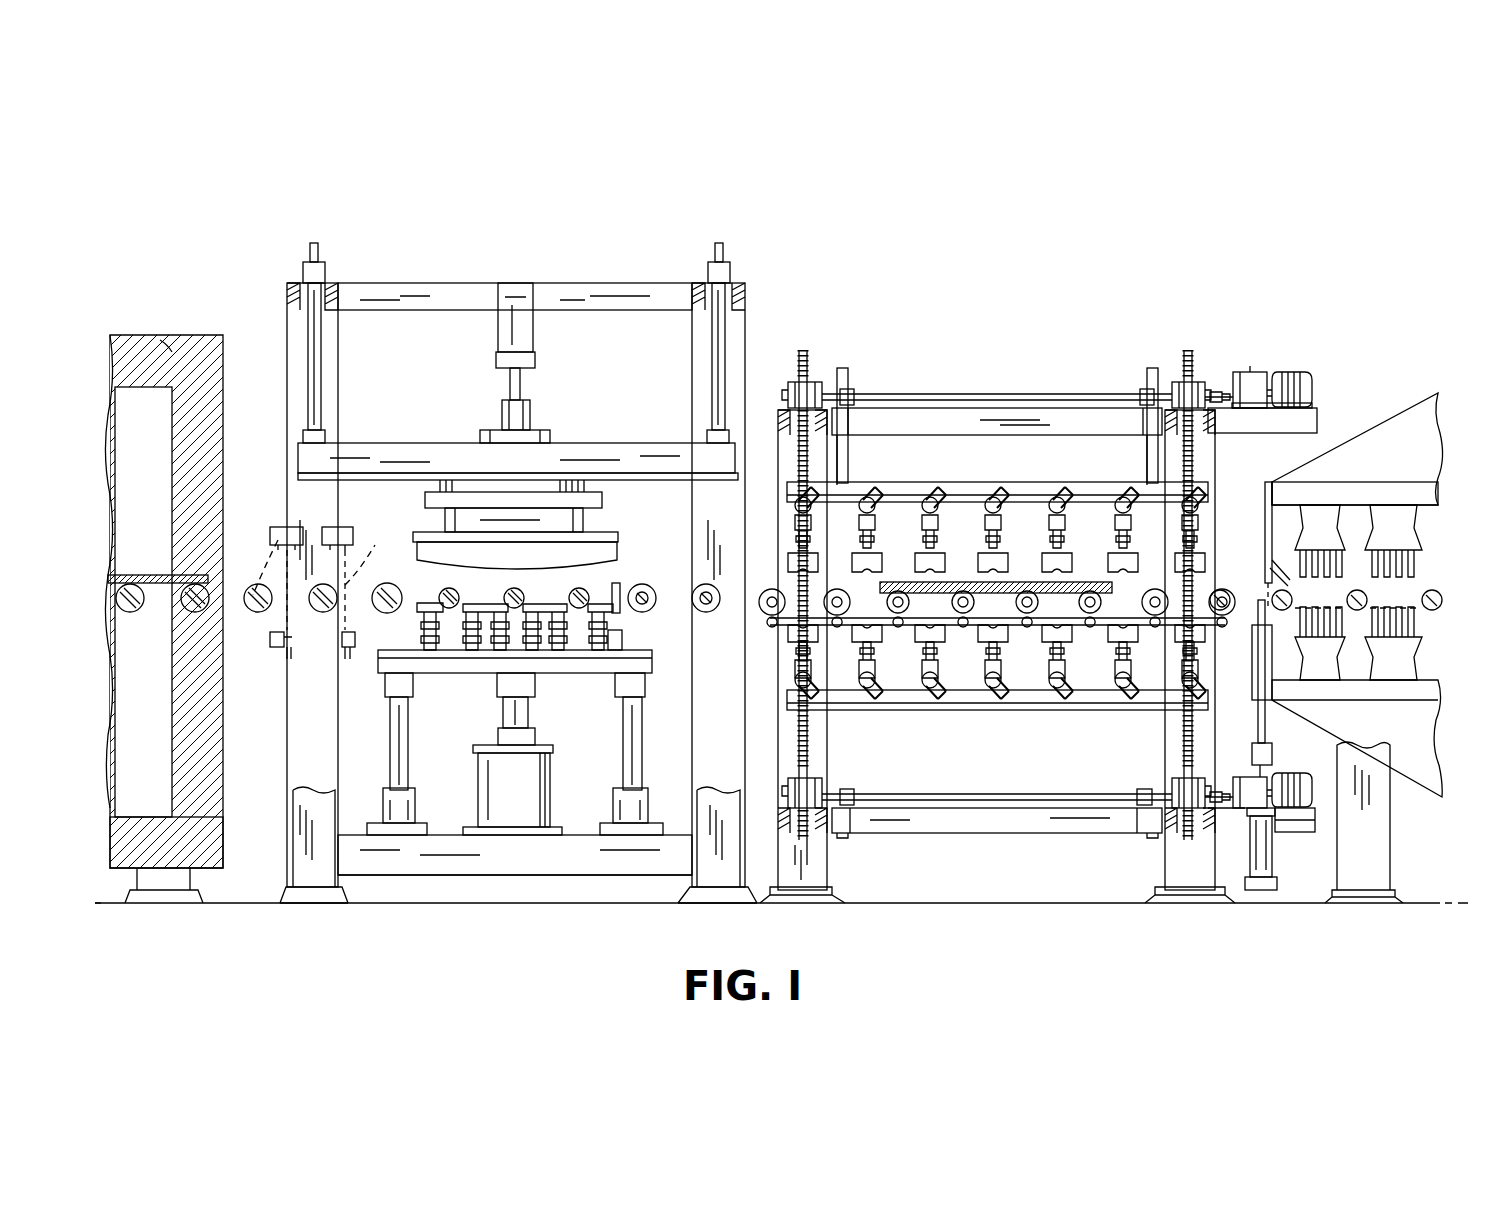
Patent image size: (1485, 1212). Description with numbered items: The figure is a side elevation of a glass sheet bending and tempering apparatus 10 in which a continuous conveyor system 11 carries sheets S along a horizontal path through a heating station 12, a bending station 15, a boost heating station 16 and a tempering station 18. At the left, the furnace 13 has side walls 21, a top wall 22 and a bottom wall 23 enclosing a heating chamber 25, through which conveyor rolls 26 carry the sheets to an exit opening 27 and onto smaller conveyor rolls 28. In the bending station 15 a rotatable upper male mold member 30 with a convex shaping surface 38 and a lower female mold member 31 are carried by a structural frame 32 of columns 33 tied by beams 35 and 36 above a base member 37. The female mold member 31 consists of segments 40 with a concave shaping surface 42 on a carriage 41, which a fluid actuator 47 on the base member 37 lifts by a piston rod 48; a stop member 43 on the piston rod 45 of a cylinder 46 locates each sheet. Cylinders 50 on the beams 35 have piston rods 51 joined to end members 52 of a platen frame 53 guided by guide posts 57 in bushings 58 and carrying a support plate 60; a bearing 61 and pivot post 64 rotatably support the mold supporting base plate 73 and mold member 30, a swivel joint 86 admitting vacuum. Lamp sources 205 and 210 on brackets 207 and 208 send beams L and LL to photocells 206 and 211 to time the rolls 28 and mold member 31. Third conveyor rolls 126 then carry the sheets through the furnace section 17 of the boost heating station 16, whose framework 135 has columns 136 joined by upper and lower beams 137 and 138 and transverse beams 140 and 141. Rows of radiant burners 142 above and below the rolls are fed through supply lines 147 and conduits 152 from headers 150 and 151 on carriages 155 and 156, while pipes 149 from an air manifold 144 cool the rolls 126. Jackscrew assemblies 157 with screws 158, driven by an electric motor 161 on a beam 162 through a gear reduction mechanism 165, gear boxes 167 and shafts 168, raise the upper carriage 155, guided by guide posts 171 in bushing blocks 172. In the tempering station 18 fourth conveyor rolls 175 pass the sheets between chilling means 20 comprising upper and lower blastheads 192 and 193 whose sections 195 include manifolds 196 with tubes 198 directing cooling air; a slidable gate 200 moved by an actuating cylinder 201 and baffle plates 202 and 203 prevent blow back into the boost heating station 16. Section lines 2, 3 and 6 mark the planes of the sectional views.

The glass sheet bending and tempering apparatus 10 is at (850, 190).
The continuous conveyor system 11 is at (250, 582).
The heating station 12 is at (178, 318).
The furnace 13 is at (148, 332).
The bending station 15 is at (616, 256).
The boost heating station 16 is at (1052, 302).
The furnace section 17 is at (980, 462).
The tempering station 18 is at (1432, 368).
The chilling means 20 is at (1402, 405).
The side walls 21 is at (156, 437).
The top wall 22 is at (172, 352).
The bottom wall 23 is at (143, 878).
The heating chamber 25 is at (162, 800).
The conveyor rolls 26 is at (130, 612).
The opening 27 is at (205, 600).
The conveyor rolls 28 is at (453, 600).
The upper male mold member 30 is at (638, 545).
The lower female mold member 31 is at (415, 620).
The structural frame 32 is at (563, 278).
The columns 33 is at (300, 790).
The beams 35 is at (405, 283).
The beams 36 is at (338, 283).
The base member 37 is at (470, 858).
The convex shaping surface 38 is at (598, 572).
The segments 40 is at (595, 615).
The carriage 41 is at (645, 672).
The concave shaping surface 42 is at (498, 608).
The retractable stop members 43 is at (620, 597).
The piston rod 45 is at (618, 612).
The fluid actuating cylinder 46 is at (622, 645).
The fluid actuator 47 is at (490, 782).
The piston rod 48 is at (520, 705).
The actuating cylinders 50 is at (508, 335).
The piston rods 51 is at (520, 388).
The end members 52 is at (386, 455).
The platen frame 53 is at (598, 440).
The guide posts 57 is at (318, 345).
The bushings 58 is at (308, 247).
The central support plate 60 is at (645, 477).
The bearing 61 is at (560, 480).
The pivot post 64 is at (482, 435).
The mold supporting base plate 73 is at (602, 506).
The swivel joint 86 is at (502, 412).
The third conveyor rolls 126 is at (706, 584).
The framework 135 is at (990, 408).
The columns 136 is at (822, 867).
The upper structural beam 137 is at (1052, 425).
The lower structural beam 138 is at (990, 832).
The upper beams 140 is at (1002, 440).
The lower beams 141 is at (790, 820).
The gas fired radiant burners 142 is at (996, 602).
The manifold 144 is at (1092, 638).
The supply lines 147 is at (930, 495).
The pipes 149 is at (772, 626).
The upper headers 150 is at (795, 500).
The lower headers 151 is at (787, 693).
The conduits 152 is at (995, 545).
The upper carriage 155 is at (985, 496).
The lower carriage 156 is at (972, 710).
The jackscrew assemblies 157 is at (823, 370).
The screws 158 is at (803, 350).
The electric motor 161 is at (1288, 372).
The structural beam 162 is at (1312, 408).
The gear reduction mechanism 165 is at (1252, 372).
The gear boxes 167 is at (1215, 395).
The shafts 168 is at (904, 391).
The guide posts 171 is at (1150, 383).
The bushing blocks 172 is at (845, 420).
The fourth conveyor rolls 175 is at (1355, 600).
The upper blasthead 192 is at (1428, 442).
The lower blasthead 193 is at (1430, 769).
The sections 195 is at (1390, 513).
The manifold 196 is at (1395, 514).
The tubes 198 is at (1415, 570).
The slidable gate 200 is at (1262, 660).
The actuating cylinder 201 is at (1272, 865).
The upper baffle plate 202 is at (1268, 560).
The lower baffle plate 203 is at (1268, 596).
The lamp source 205 is at (288, 527).
The photocell 206 is at (276, 648).
The adjustable bracket 207 is at (316, 590).
The adjustable bracket 208 is at (287, 660).
The lamp source 210 is at (340, 527).
The photocell 211 is at (355, 648).
The section line 2 is at (1290, 322).
The section line 3 is at (292, 372).
The section line 6 is at (1395, 465).
The sheets S is at (154, 573).
The beam L is at (259, 549).
The second beam LL is at (363, 557).